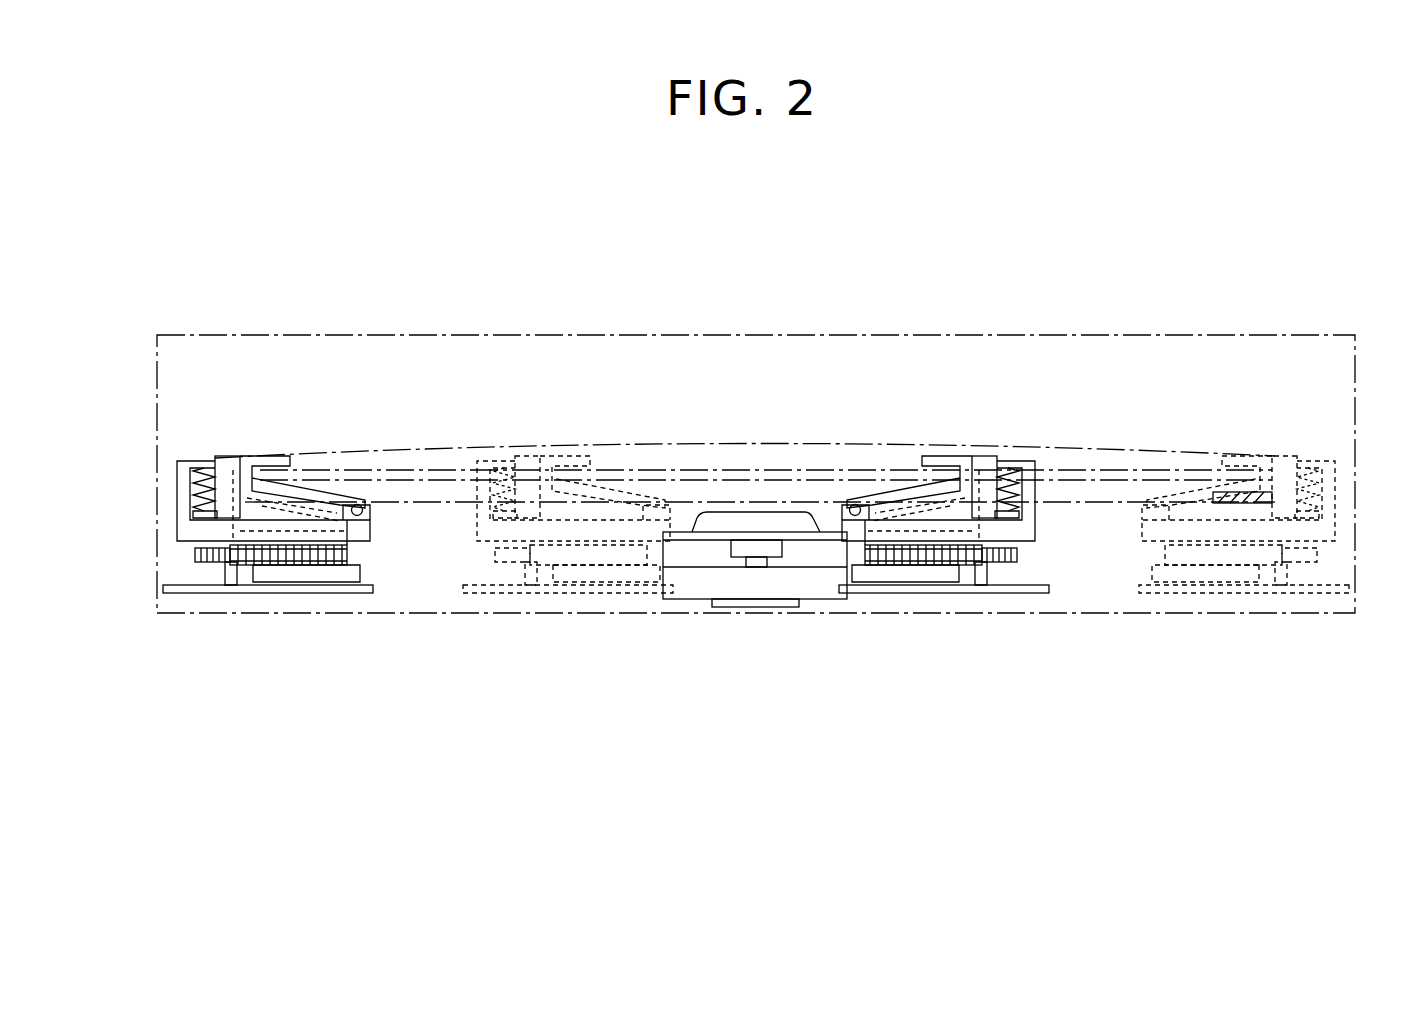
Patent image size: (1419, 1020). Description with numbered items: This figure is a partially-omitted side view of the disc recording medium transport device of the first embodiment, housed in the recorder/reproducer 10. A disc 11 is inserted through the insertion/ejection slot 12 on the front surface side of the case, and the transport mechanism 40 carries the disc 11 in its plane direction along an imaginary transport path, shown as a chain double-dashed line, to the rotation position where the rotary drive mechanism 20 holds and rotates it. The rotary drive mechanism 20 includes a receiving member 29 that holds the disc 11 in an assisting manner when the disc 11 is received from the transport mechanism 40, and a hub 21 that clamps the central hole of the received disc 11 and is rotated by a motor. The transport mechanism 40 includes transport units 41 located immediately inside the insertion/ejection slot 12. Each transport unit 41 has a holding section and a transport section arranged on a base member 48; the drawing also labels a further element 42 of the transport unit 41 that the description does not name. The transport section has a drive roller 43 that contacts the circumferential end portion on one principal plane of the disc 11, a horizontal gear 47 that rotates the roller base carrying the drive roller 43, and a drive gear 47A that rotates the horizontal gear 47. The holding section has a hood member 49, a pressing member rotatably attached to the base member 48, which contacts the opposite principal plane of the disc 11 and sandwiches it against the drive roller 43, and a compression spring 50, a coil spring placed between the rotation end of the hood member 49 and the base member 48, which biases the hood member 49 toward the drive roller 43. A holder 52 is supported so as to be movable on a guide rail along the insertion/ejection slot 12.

The recorder/reproducer 10 is at (405, 330).
The disc 11 is at (1091, 468).
The insertion/ejection slot 12 is at (735, 455).
The rotary drive mechanism 20 is at (748, 646).
The hub 21 is at (718, 520).
The receiving member 29 is at (1273, 488).
The transport mechanism 40 is at (750, 521).
The transport unit 41 is at (750, 521).
The slider block 42 is at (258, 462).
The drive roller 43 is at (318, 492).
The horizontal gear 47 is at (290, 558).
The drive gear 47A is at (198, 556).
The base member 48 is at (180, 532).
The hood member 49 is at (288, 463).
The compression spring 50 is at (193, 487).
The holder 52 is at (245, 594).